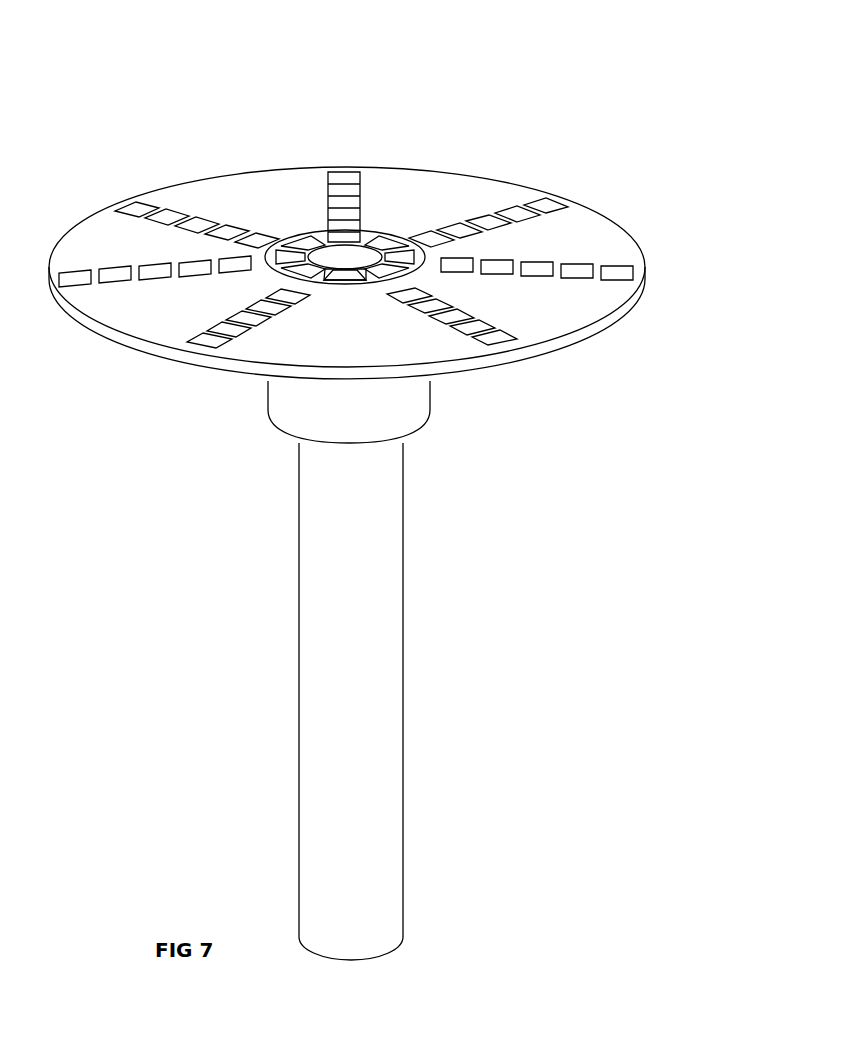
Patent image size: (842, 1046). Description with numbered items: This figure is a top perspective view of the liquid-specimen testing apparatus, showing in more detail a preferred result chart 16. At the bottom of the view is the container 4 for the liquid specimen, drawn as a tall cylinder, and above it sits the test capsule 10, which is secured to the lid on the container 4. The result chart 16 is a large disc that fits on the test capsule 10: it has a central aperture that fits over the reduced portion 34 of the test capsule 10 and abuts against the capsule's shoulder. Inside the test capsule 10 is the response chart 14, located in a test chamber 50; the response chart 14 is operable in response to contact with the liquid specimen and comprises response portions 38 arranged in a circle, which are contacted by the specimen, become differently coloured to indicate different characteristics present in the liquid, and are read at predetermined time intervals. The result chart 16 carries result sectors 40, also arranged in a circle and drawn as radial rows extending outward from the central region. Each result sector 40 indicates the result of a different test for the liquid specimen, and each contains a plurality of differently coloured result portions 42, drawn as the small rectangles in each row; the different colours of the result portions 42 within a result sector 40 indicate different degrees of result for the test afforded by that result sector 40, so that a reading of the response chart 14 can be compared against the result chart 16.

The container 4 is at (298, 742).
The test capsule 10 is at (265, 405).
The response chart 14 is at (313, 244).
The result chart 16 is at (122, 318).
The reduced portion 34 is at (345, 287).
The response portions 38 is at (392, 240).
The result sectors 40 is at (122, 192).
The result portions 42 is at (336, 187).
The test chamber 50 is at (333, 255).